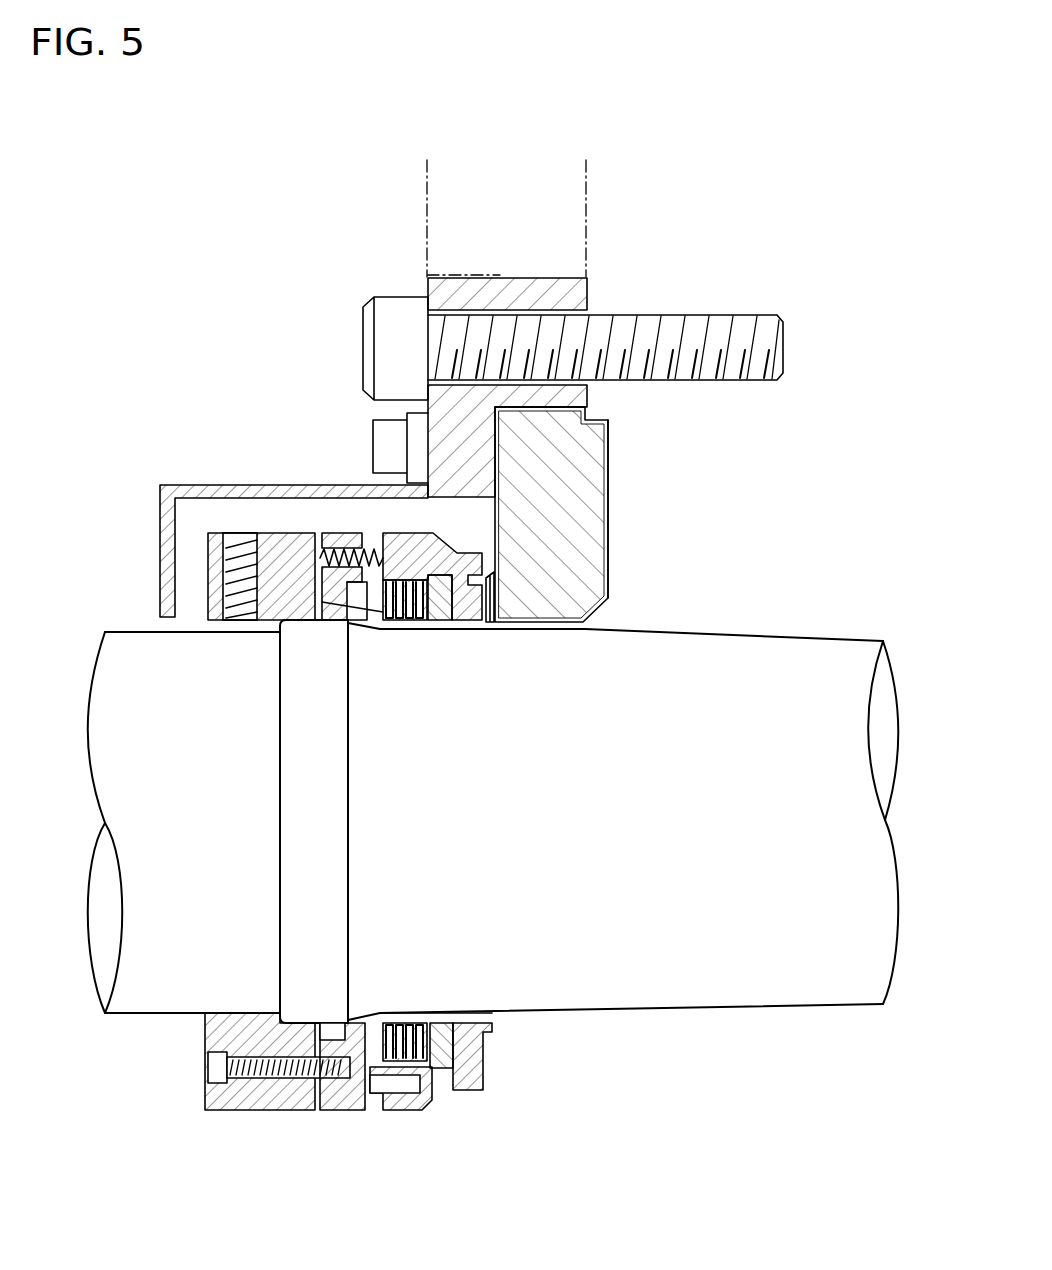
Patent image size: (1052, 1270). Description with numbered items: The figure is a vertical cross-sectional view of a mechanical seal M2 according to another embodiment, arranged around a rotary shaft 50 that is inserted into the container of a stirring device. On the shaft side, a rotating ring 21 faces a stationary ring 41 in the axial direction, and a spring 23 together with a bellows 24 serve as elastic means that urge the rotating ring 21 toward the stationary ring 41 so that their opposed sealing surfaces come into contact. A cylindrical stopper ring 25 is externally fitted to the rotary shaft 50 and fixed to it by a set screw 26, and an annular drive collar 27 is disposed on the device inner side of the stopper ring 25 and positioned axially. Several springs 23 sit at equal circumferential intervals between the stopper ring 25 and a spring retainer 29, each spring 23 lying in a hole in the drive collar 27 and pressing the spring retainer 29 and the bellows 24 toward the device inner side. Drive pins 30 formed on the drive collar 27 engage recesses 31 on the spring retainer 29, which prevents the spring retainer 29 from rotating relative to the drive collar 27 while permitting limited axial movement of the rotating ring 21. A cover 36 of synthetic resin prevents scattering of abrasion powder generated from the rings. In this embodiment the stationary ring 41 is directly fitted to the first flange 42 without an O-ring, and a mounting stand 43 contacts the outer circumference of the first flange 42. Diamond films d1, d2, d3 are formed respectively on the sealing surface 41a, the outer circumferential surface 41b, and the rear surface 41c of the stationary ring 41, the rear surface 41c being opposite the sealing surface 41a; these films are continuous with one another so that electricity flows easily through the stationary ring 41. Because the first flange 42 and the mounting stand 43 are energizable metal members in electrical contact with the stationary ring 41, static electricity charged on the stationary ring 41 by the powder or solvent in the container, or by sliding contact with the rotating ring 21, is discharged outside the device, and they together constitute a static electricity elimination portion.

The rotating ring 21 is at (465, 628).
The spring 23 is at (390, 533).
The bellows 24 is at (403, 634).
The stopper ring 25 is at (275, 535).
The set screw 26 is at (232, 535).
The drive collar 27 is at (336, 1112).
The spring retainer 29 is at (374, 548).
The drive pin 30 is at (375, 1092).
The recess 31 is at (418, 1087).
The cover 36 is at (185, 487).
The stationary ring 41 is at (542, 610).
The sealing surface 41a is at (490, 628).
The outer circumferential surface 41b is at (518, 407).
The rear surface 41c is at (605, 490).
The first flange 42 is at (440, 290).
The mounting stand 43 is at (586, 212).
The rotary shaft 50 is at (740, 834).
The mechanical seal M2 is at (258, 380).
The diamond film d1 is at (497, 528).
The diamond film d2 is at (550, 410).
The diamond film d3 is at (605, 538).